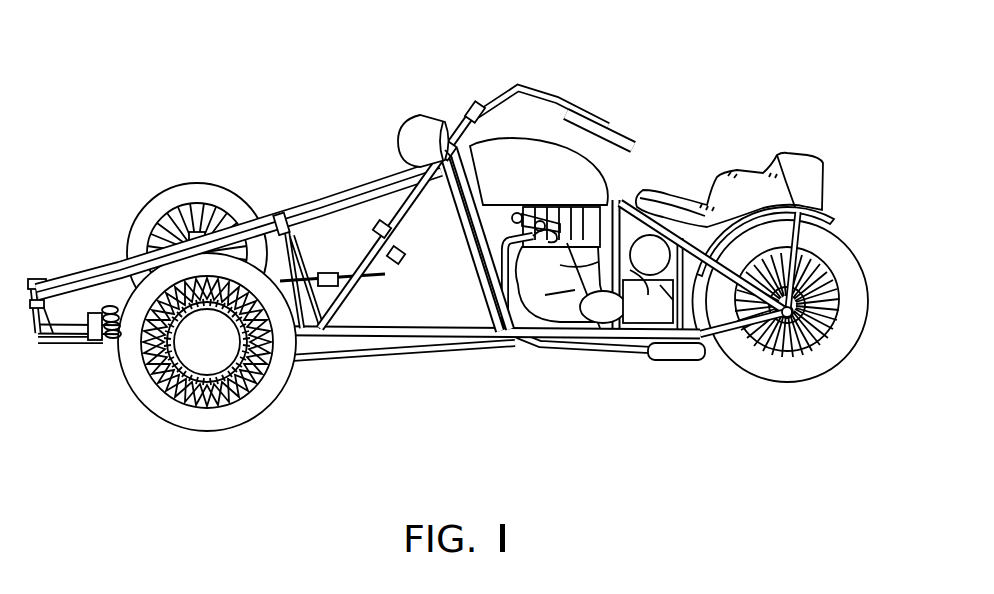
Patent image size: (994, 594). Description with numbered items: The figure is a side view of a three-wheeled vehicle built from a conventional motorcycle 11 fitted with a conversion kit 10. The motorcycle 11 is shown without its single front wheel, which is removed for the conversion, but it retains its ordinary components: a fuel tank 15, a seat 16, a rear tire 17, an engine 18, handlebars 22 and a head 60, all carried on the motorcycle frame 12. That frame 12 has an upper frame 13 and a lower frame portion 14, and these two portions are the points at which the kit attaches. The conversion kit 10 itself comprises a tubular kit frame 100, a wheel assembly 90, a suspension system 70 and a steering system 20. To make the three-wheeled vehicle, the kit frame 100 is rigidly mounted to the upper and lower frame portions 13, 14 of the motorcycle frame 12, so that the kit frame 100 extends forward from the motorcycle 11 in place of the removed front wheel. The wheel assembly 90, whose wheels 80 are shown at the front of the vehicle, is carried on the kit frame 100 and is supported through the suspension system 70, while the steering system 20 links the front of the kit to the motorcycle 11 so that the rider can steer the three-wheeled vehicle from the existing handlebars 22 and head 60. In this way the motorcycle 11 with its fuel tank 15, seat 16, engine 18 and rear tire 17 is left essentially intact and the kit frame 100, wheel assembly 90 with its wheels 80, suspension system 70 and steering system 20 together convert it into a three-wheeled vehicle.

The conversion kit 10 is at (149, 152).
The motorcycle 11 is at (752, 124).
The frame 12 is at (470, 222).
The upper frame 13 is at (627, 193).
The lower frame portion 14 is at (533, 342).
The fuel tank 15 is at (568, 183).
The seat 16 is at (677, 200).
The rear tire 17 is at (802, 358).
The engine 18 is at (555, 270).
The steering system 20 is at (330, 256).
The handlebars 22 is at (518, 86).
The head 60 is at (456, 128).
The suspension system 70 is at (171, 216).
The front wheel 80 is at (200, 196).
The wheel assembly 90 is at (127, 406).
The kit frame 100 is at (294, 190).